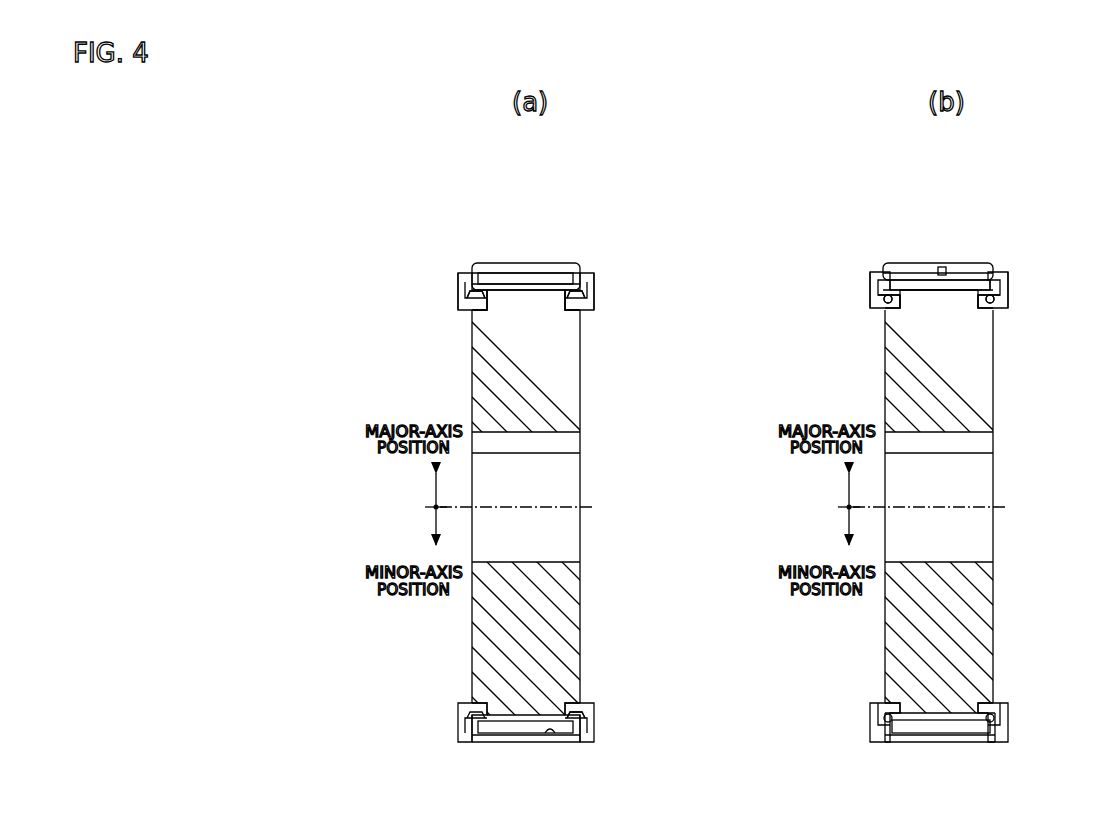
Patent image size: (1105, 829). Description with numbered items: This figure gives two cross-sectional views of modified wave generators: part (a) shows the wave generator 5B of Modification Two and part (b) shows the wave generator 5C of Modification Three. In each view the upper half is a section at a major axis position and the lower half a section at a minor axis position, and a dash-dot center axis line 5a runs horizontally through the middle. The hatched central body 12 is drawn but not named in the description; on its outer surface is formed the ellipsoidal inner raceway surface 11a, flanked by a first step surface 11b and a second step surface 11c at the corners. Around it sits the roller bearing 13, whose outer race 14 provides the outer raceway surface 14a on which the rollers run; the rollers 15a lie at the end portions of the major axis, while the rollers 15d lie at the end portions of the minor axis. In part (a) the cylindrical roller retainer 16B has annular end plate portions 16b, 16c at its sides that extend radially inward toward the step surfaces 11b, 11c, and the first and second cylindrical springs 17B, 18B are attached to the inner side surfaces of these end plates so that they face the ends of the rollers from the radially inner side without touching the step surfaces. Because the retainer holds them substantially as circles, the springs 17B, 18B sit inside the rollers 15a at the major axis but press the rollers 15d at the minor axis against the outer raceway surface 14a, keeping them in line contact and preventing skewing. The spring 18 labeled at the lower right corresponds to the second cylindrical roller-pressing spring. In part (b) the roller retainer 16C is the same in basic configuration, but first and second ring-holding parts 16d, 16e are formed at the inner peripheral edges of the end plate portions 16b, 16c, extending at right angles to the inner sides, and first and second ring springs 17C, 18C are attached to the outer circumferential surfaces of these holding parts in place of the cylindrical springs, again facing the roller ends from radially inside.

The wave generator 5B is at (466, 240).
The wave generator 5C is at (897, 240).
The center axis line 5a is at (553, 508).
The inner raceway surface 11a is at (553, 294).
The first step surface 11b is at (472, 312).
The second step surface 11c is at (574, 313).
The main body 12 is at (536, 385).
The roller bearing 13 is at (524, 252).
The outer race 14 is at (527, 745).
The outer raceway surface 14a is at (550, 731).
The rollers at the major axis end portions 15a is at (543, 276).
The rollers at the minor axis end portions 15d is at (498, 720).
The roller retainer 16B is at (456, 273).
The roller retainer 16C is at (866, 276).
The first end plate portion 16b is at (459, 288).
The second end plate portion 16c is at (594, 285).
The first ring-holding part 16d is at (890, 307).
The second ring-holding part 16e is at (988, 307).
The first cylindrical spring 17B is at (470, 299).
The first ring spring 17C is at (885, 298).
The second cylindrical spring 18 is at (583, 709).
The second cylindrical spring 18B is at (582, 299).
The second ring spring 18C is at (993, 301).